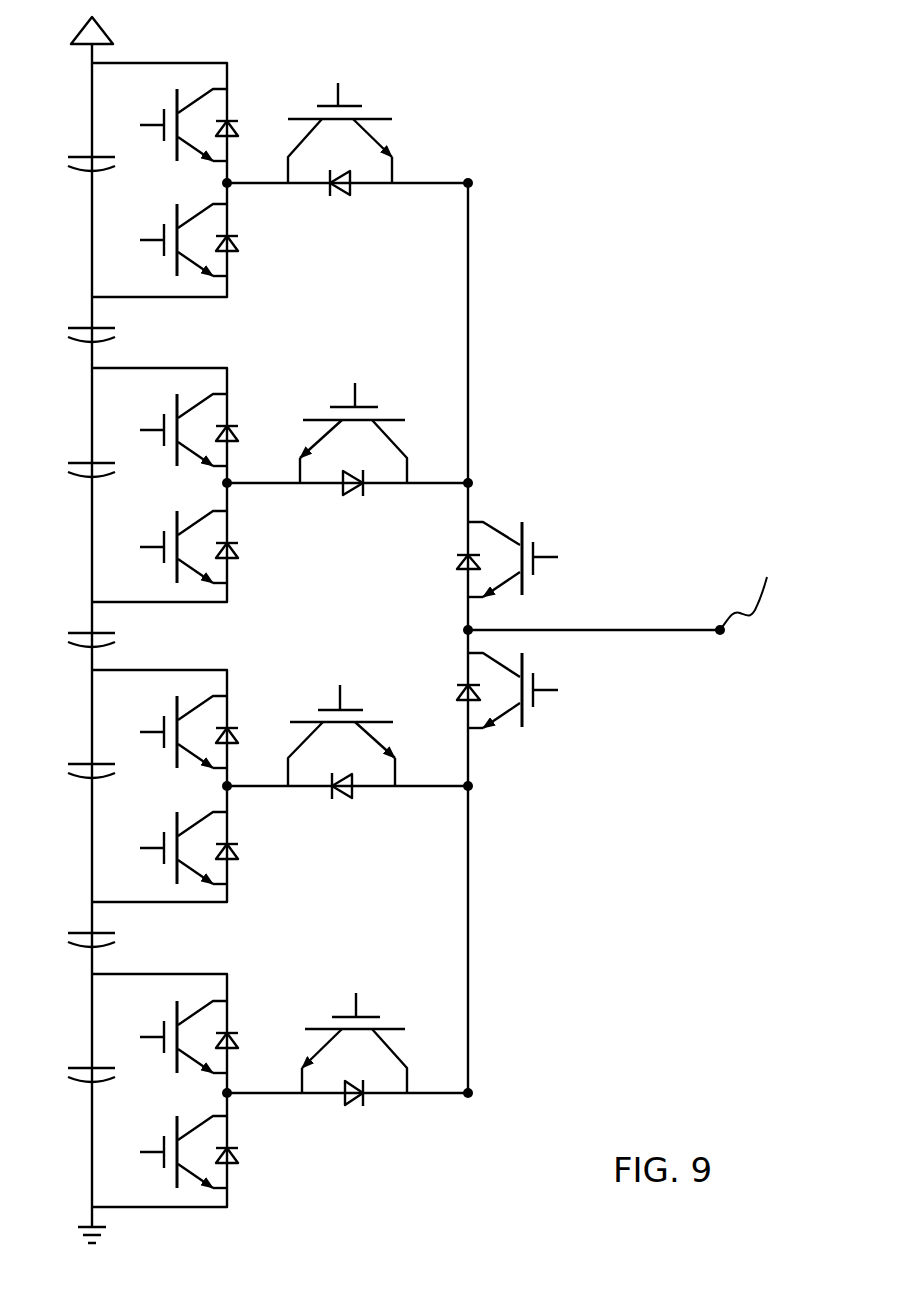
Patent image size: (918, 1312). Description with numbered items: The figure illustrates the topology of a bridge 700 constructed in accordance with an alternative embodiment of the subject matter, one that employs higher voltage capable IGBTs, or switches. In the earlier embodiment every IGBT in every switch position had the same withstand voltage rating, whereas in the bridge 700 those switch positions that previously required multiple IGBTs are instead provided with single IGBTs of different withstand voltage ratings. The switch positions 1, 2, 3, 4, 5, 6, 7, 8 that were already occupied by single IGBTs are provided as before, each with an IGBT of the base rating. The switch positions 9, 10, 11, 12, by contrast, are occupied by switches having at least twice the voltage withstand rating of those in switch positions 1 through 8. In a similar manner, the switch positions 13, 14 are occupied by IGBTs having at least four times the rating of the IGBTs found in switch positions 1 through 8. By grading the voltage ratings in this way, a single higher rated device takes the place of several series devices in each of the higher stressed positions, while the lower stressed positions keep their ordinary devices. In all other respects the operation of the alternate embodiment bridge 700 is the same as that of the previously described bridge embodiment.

The bridge 700 is at (436, 630).
The switch position 1 is at (189, 125).
The switch position 2 is at (189, 240).
The switch position 3 is at (189, 430).
The switch position 4 is at (189, 547).
The switch position 5 is at (189, 732).
The switch position 6 is at (189, 848).
The switch position 7 is at (189, 1037).
The switch position 8 is at (189, 1152).
The switch position 9 is at (340, 139).
The switch position 10 is at (353, 439).
The switch position 11 is at (341, 742).
The switch position 12 is at (354, 1049).
The switch position 13 is at (507, 559).
The switch position 14 is at (507, 690).